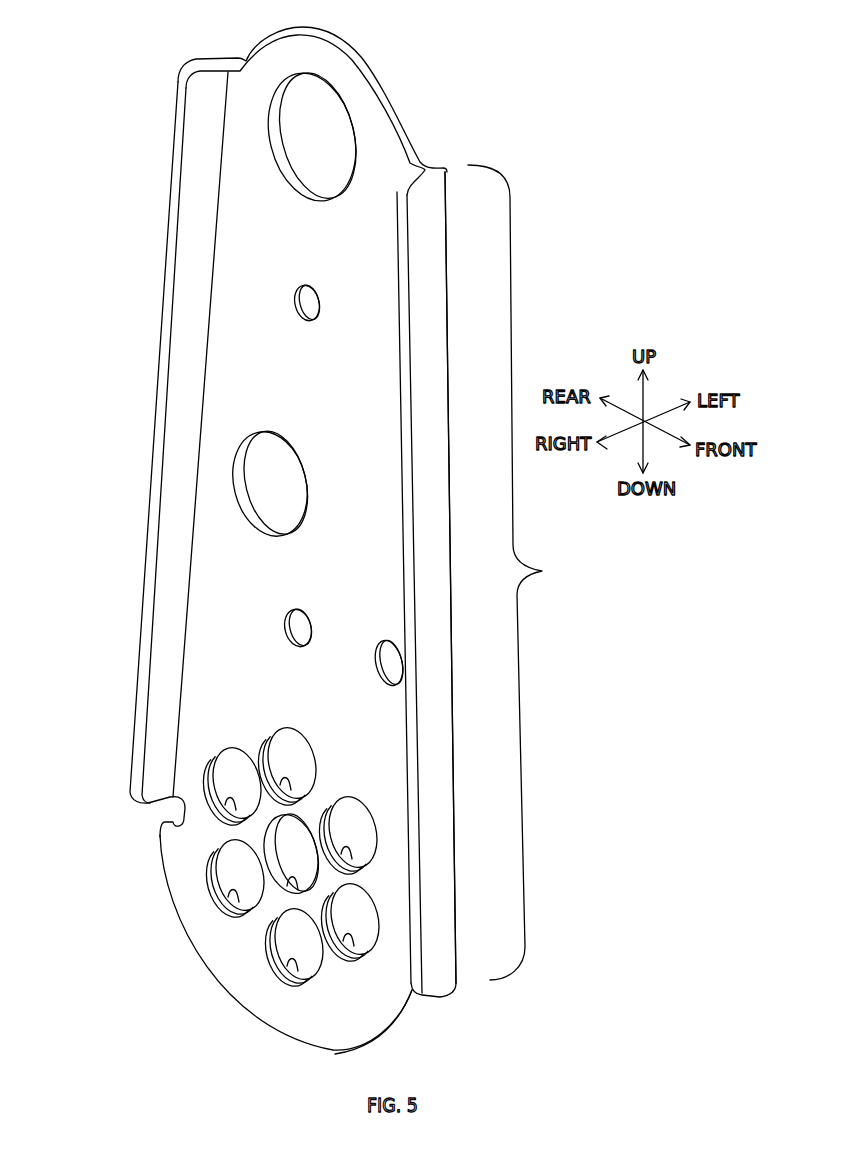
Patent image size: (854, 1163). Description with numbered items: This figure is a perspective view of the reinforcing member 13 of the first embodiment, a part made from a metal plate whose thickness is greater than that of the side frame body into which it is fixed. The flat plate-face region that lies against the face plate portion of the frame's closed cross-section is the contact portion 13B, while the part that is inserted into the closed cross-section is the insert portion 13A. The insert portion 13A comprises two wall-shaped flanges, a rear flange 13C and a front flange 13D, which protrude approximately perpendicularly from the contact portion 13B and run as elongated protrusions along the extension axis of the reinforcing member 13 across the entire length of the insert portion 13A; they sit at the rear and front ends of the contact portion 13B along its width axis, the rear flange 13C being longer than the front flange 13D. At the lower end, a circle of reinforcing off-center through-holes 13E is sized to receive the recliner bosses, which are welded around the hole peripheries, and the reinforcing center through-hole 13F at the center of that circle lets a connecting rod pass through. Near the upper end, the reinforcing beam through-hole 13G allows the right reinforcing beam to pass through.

The reinforcing member 13 is at (122, 249).
The insert portion 13A is at (515, 574).
The contact portion 13B is at (233, 562).
The rear flange 13C is at (165, 302).
The front flange 13D is at (402, 330).
The reinforcing off-center through-holes 13E is at (212, 793).
The reinforcing center through-hole 13F is at (293, 873).
The reinforcing beam through-hole 13G is at (292, 166).